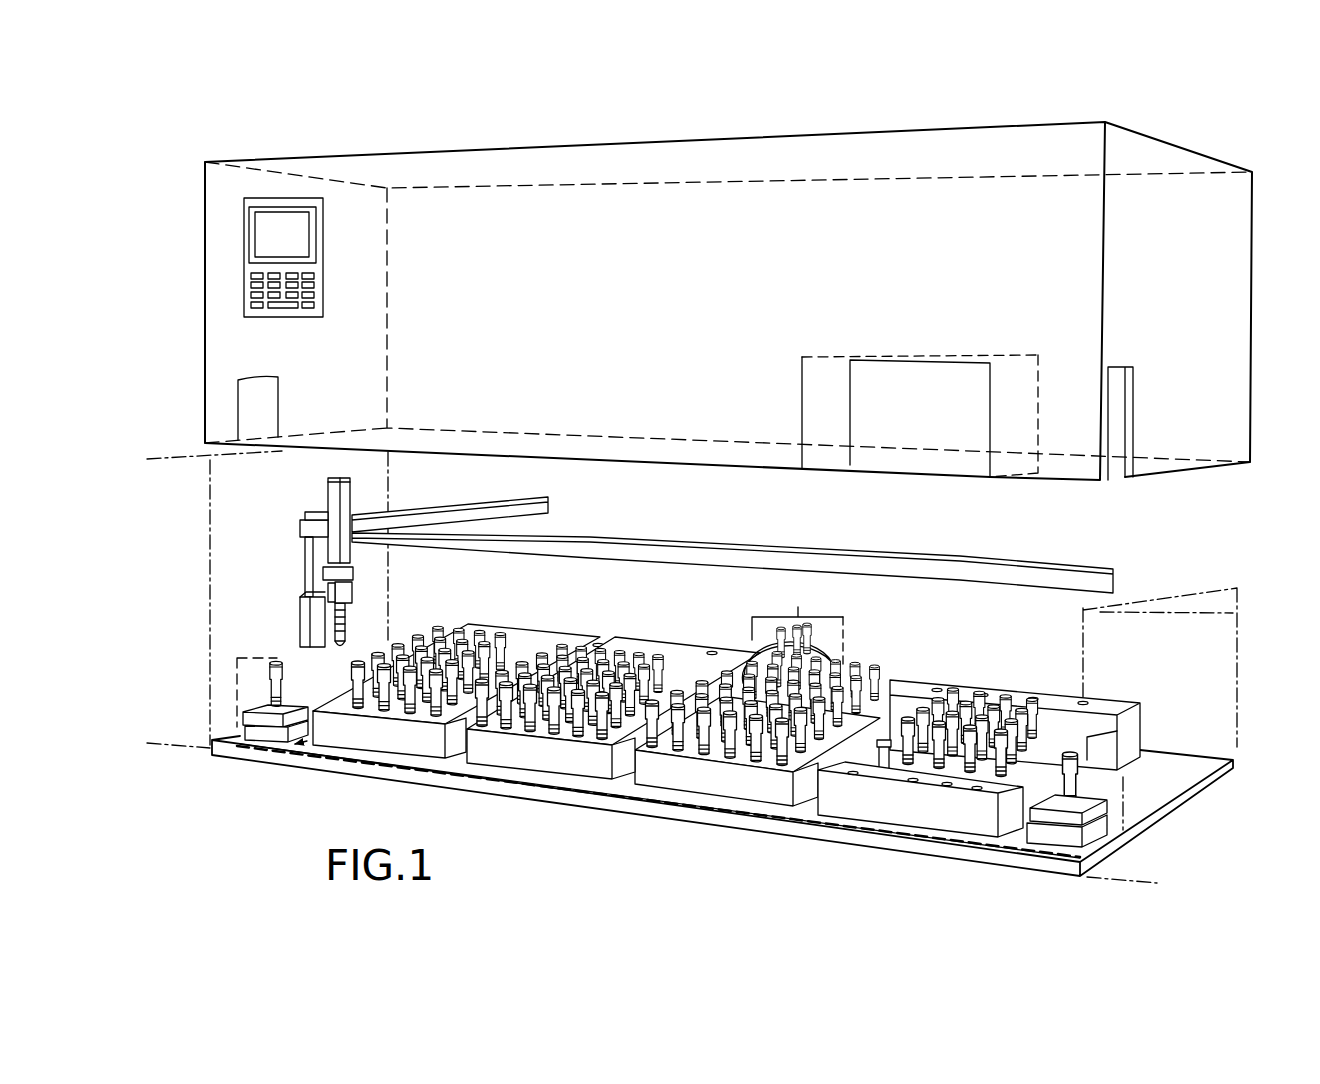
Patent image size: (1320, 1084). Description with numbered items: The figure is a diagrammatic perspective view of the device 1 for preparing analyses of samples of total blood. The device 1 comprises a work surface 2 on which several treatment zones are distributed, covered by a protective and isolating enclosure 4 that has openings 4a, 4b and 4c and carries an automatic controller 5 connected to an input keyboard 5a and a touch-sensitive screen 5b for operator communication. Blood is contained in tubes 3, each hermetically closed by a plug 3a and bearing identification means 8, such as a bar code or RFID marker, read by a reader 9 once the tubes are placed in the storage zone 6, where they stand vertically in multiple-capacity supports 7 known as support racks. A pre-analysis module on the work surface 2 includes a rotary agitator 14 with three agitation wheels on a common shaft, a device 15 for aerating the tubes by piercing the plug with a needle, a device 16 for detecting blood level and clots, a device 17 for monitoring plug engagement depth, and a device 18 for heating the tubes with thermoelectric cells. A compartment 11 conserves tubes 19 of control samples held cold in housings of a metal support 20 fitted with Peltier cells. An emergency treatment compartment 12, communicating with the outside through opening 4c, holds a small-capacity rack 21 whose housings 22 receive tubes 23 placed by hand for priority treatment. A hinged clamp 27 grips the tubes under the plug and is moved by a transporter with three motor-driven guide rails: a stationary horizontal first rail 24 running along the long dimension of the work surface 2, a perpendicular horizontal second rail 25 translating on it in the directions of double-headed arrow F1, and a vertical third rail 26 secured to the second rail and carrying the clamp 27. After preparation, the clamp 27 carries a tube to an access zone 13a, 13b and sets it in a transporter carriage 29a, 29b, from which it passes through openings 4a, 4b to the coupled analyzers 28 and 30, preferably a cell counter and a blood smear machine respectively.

The device 1 is at (268, 506).
The work surface 2 is at (1183, 762).
The tubes 3 is at (327, 682).
The plug 3a is at (343, 592).
The protective and isolating enclosure 4 is at (586, 288).
The opening 4a is at (1115, 415).
The opening 4b is at (262, 404).
The opening 4c is at (871, 403).
The automatic controller 5 is at (236, 261).
The input keyboard 5a is at (310, 290).
The touch-sensitive screen 5b is at (300, 233).
The storage zone 6 is at (510, 783).
The multiple-capacity supports 7 is at (373, 737).
The identification means 8 is at (345, 630).
The reader 9 is at (298, 615).
The compartment 11 is at (1052, 785).
The emergency treatment compartment 12 is at (818, 817).
The access compartment 13a is at (1027, 842).
The access compartment 13b is at (258, 750).
The agitator 14 is at (792, 635).
The device for aerating tubes 15 is at (585, 643).
The device for detecting the level of blood 16 is at (672, 647).
The device for monitoring plug depth 17 is at (737, 653).
The device for heating tubes 18 is at (1010, 698).
The tubes of control samples 19 is at (945, 706).
The metal support 20 is at (1050, 757).
The small-capacity rack 21 is at (973, 822).
The housings 22 is at (912, 782).
The tubes 23 is at (880, 780).
The first rail 24 is at (1000, 573).
The second rail 25 is at (503, 510).
The third rail 26 is at (328, 503).
The hinged clamp 27 is at (353, 574).
The analyzer 28 is at (180, 605).
The transporter carriage 29a is at (1105, 818).
The transporter carriage 29b is at (240, 718).
The analyzer 30 is at (1150, 652).
The double-headed arrow F1 is at (835, 537).